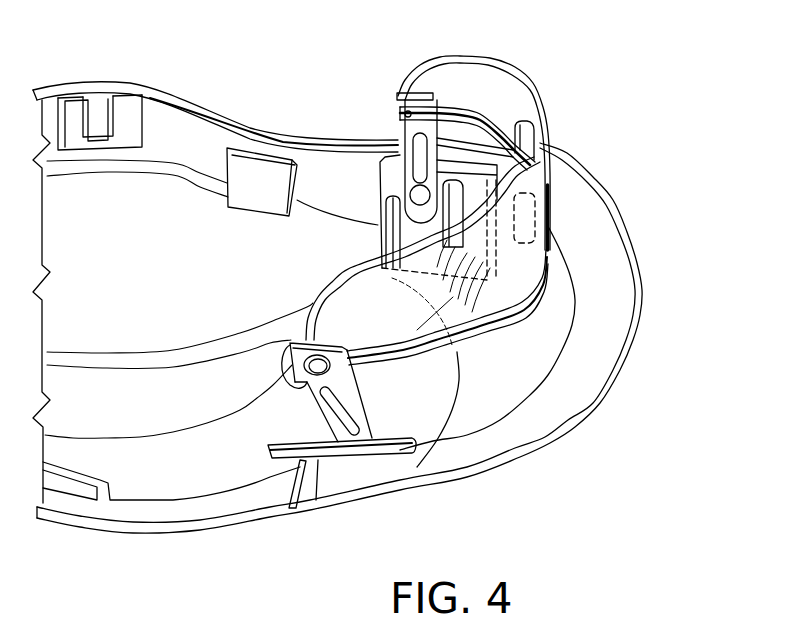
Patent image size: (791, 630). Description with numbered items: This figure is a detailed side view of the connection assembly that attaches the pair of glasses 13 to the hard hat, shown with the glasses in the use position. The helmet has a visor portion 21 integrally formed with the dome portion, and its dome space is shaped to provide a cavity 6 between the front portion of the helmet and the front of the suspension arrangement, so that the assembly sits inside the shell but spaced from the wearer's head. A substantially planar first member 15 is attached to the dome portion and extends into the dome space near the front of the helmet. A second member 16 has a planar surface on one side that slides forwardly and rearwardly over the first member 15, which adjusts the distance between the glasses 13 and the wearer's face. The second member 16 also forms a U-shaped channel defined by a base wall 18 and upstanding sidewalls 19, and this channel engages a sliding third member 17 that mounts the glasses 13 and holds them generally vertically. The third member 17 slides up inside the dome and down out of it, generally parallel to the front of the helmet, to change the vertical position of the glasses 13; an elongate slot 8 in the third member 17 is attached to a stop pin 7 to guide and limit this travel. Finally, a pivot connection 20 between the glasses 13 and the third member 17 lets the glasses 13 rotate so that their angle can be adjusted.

The cavity 6 is at (547, 337).
The stop pin 7 is at (443, 162).
The elongate slot 8 is at (413, 104).
The pair of glasses 13 is at (549, 262).
The first member 15 is at (397, 140).
The second member 16 is at (380, 167).
The third member 17 is at (380, 157).
The base wall 18 is at (380, 232).
The upstanding sidewalls 19 is at (385, 212).
The pivot connection 20 is at (295, 372).
The visor portion 21 is at (597, 381).